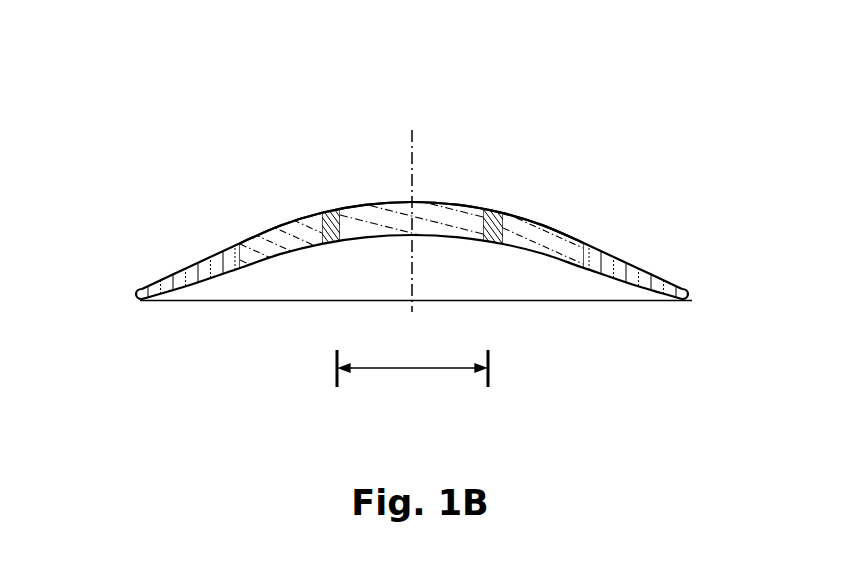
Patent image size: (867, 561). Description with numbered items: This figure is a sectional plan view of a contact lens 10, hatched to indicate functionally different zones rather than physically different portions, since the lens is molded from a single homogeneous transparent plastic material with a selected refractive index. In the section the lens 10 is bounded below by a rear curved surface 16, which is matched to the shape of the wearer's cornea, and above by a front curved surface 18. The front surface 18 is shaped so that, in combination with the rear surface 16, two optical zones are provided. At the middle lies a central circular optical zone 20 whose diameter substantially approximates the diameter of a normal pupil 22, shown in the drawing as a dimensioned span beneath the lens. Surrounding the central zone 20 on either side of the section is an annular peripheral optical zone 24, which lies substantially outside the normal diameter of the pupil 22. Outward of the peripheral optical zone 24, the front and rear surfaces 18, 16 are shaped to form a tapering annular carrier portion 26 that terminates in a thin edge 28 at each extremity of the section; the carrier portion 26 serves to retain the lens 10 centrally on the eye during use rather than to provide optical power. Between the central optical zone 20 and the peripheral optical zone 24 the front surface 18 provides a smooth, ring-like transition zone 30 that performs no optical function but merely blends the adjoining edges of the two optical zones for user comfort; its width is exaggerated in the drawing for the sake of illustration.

The contact lens 10 is at (474, 102).
The rear curved surface 16 is at (526, 281).
The front curved surface 18 is at (510, 212).
The central circular optical zone 20 is at (388, 215).
The pupil 22 is at (386, 368).
The annular peripheral optical zone 24 is at (285, 227).
The tapering annular carrier portion 26 is at (187, 276).
The thin edge 28 is at (133, 302).
The transition zone 30 is at (325, 212).